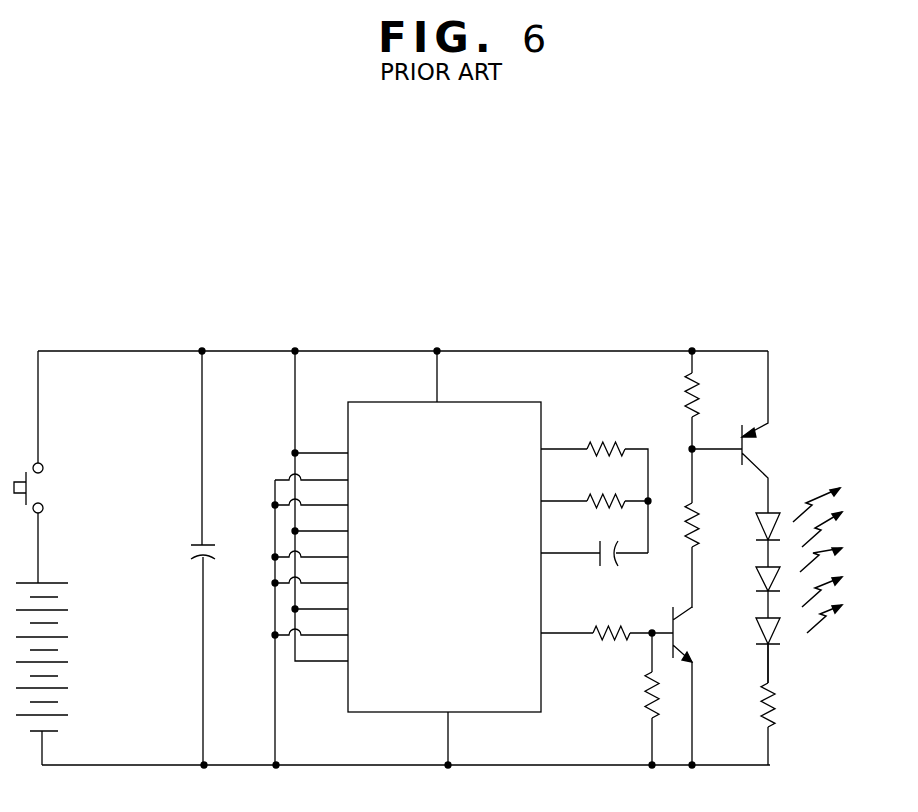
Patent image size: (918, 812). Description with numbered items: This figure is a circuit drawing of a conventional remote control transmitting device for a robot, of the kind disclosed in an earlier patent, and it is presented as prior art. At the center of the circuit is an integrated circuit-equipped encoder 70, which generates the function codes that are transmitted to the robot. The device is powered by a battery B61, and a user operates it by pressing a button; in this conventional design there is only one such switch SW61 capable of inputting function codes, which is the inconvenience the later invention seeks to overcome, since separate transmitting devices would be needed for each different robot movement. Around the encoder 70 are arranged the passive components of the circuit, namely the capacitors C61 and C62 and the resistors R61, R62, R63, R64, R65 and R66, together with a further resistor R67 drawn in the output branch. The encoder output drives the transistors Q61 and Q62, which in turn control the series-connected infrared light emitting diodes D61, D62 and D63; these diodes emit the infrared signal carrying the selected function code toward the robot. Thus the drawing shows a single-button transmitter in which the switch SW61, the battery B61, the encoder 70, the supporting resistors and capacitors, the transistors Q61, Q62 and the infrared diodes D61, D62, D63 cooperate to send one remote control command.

The encoder 70 is at (486, 402).
The switch SW61 is at (58, 488).
The battery B61 is at (64, 657).
The capacitor C61 is at (182, 558).
The capacitor C62 is at (594, 542).
The resistor R61 is at (716, 400).
The resistor R62 is at (594, 483).
The resistor R63 is at (596, 486).
The resistor R64 is at (716, 527).
The resistor R65 is at (607, 618).
The resistor R66 is at (628, 699).
The resistor R67 is at (796, 704).
The transistor Q61 is at (709, 680).
The transistor Q62 is at (748, 432).
The infrared light emitting diode D61 is at (788, 529).
The infrared light emitting diode D62 is at (751, 592).
The infrared light emitting diode D63 is at (751, 650).